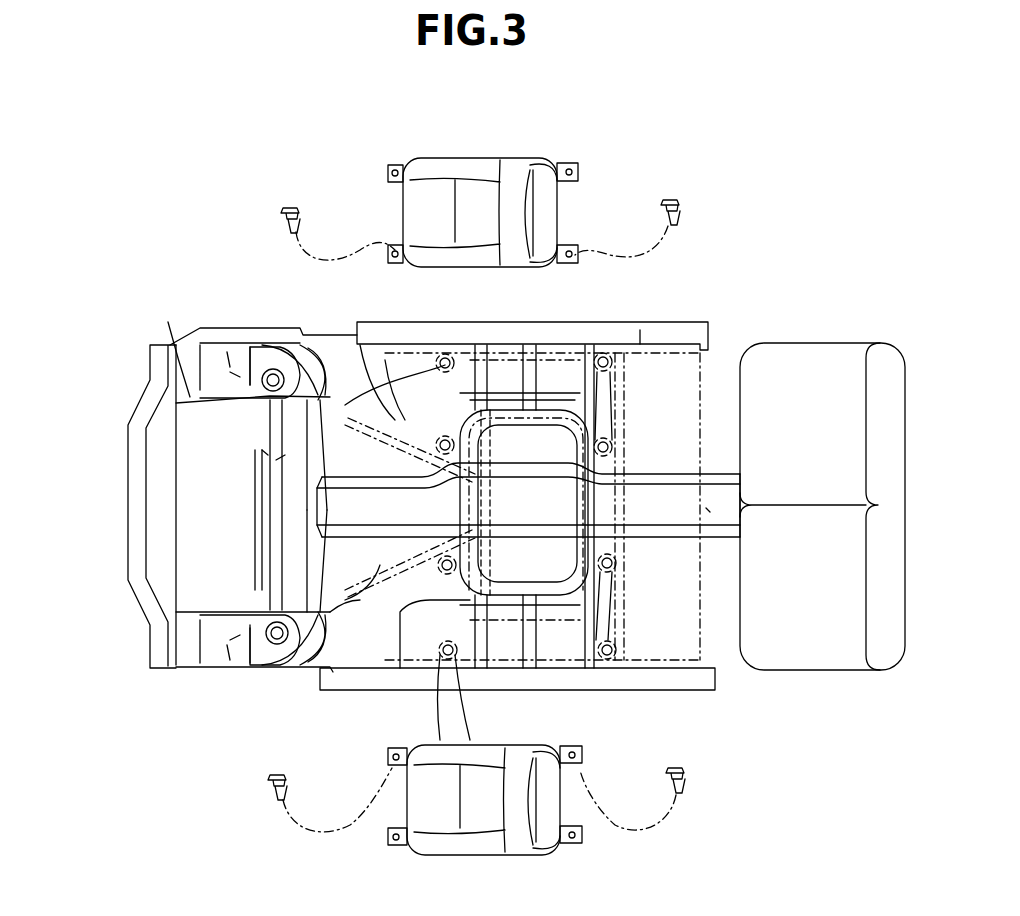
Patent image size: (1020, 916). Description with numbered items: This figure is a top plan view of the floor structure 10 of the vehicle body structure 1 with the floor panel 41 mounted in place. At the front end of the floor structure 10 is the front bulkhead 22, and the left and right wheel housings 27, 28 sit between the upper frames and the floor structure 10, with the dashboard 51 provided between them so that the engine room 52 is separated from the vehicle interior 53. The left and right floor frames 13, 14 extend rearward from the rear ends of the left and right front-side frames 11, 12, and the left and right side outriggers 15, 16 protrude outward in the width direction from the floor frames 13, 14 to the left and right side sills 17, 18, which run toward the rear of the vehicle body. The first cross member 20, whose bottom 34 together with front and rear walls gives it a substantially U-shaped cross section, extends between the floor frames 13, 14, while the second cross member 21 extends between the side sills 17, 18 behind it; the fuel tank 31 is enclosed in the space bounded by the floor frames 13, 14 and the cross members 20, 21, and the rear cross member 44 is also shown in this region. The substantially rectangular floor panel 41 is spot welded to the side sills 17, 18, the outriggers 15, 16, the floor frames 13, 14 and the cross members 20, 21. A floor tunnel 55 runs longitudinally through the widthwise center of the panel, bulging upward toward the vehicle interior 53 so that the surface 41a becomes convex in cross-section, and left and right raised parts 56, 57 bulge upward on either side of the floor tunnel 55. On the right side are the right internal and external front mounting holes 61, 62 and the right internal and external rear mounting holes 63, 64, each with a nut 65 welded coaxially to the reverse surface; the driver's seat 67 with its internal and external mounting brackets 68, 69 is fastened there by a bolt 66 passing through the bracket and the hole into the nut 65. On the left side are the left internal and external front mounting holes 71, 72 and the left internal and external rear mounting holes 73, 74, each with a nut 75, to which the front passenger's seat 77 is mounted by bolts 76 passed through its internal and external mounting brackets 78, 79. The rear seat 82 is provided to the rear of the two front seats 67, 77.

The vehicle body structure 1 is at (112, 446).
The floor structure for a vehicle body 10 is at (263, 326).
The left front-side frame 11 is at (234, 674).
The right front-side frame 12 is at (251, 338).
The left floor frame 13 is at (542, 698).
The right floor frame 14 is at (542, 465).
The left side outrigger 15 is at (345, 626).
The right side outrigger 16 is at (320, 391).
The left side sill 17 is at (517, 711).
The right side sill 18 is at (545, 310).
The first cross member 20 is at (348, 679).
The second cross member 21 is at (661, 506).
The front bulkhead 22 is at (109, 506).
The left wheel housing 27 is at (225, 678).
The right wheel housing 28 is at (225, 321).
The fuel tank 31 is at (641, 506).
The bottom 34 is at (528, 500).
The floor panel 41 is at (822, 470).
The surface of the floor panel 41a is at (770, 480).
The rear cross member 44 is at (673, 505).
The dashboard 51 is at (235, 521).
The engine room 52 is at (232, 505).
The vehicle interior 53 is at (524, 502).
The floor tunnel 55 is at (263, 677).
The left raised part 56 is at (520, 660).
The right raised part 57 is at (520, 355).
The right internal front mounting hole 61 is at (410, 450).
The right external front mounting hole 62 is at (391, 384).
The right internal rear mounting hole 63 is at (638, 414).
The right external rear mounting hole 64 is at (660, 308).
The nut 65 is at (543, 465).
The bolt 66 is at (492, 195).
The driver's seat 67 is at (480, 176).
The internal mounting bracket 68 is at (370, 217).
The external mounting bracket 69 is at (370, 134).
The left internal front mounting hole 71 is at (410, 563).
The left external front mounting hole 72 is at (437, 671).
The left internal rear mounting hole 73 is at (652, 593).
The left external rear mounting hole 74 is at (653, 639).
The nut 75 is at (520, 706).
The bolt 76 is at (479, 794).
The front passenger's seat 77 is at (483, 826).
The internal mounting bracket 78 is at (359, 774).
The external mounting bracket 79 is at (359, 860).
The rear seat 82 is at (822, 501).